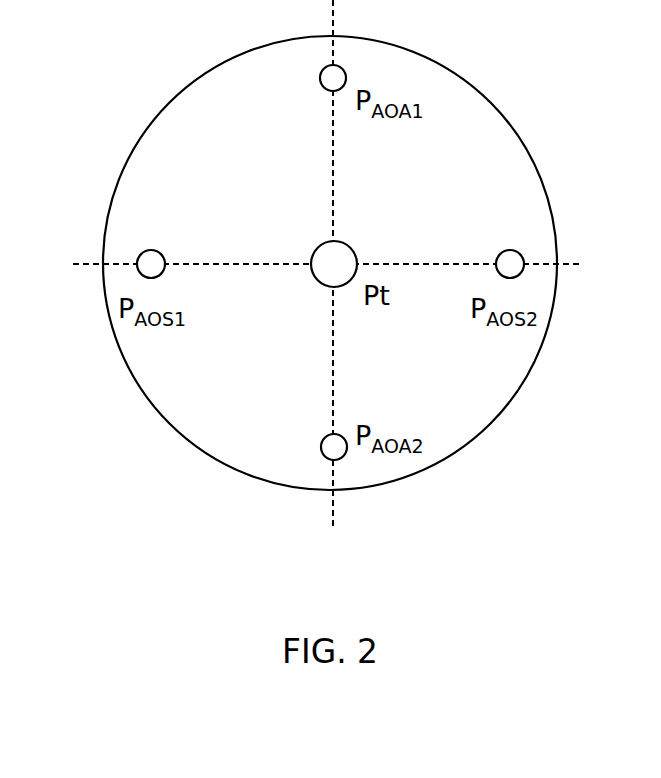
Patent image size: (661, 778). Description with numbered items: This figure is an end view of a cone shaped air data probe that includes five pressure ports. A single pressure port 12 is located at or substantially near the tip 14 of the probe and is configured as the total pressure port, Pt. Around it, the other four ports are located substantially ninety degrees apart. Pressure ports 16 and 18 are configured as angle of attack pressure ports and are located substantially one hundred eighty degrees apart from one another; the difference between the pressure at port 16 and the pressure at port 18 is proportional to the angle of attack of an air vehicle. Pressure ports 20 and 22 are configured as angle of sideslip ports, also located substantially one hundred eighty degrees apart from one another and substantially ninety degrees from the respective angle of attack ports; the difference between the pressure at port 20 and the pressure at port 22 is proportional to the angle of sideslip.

The pressure port 12 is at (346, 243).
The tip 14 is at (296, 290).
The pressure port 16 is at (320, 78).
The pressure port 18 is at (321, 447).
The pressure port 20 is at (152, 250).
The pressure port 22 is at (510, 250).